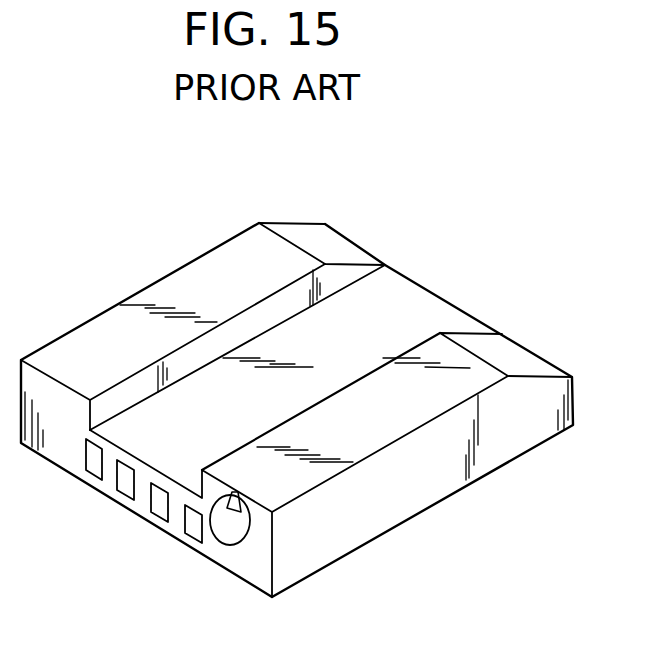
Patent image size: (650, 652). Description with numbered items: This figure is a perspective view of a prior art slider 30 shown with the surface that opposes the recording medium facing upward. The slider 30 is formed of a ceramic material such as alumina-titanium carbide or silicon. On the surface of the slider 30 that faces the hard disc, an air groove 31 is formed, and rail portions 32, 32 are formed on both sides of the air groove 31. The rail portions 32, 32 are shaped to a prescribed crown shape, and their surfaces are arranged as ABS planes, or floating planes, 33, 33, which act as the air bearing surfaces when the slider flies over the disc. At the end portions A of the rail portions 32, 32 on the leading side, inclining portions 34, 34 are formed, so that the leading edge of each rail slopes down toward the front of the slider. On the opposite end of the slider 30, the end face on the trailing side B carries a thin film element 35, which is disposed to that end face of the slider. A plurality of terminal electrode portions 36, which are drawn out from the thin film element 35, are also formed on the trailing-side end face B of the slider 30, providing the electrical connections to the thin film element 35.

The slider 30 is at (448, 265).
The air groove 31 is at (423, 303).
The rail portion 32 is at (142, 280).
The ABS plane 33 is at (203, 292).
The inclining portion 34 is at (310, 235).
The thin film element 35 is at (226, 547).
The terminal electrode portion 36 is at (192, 517).
The end portion on the leading side A is at (400, 248).
The trailing side end face B is at (127, 513).